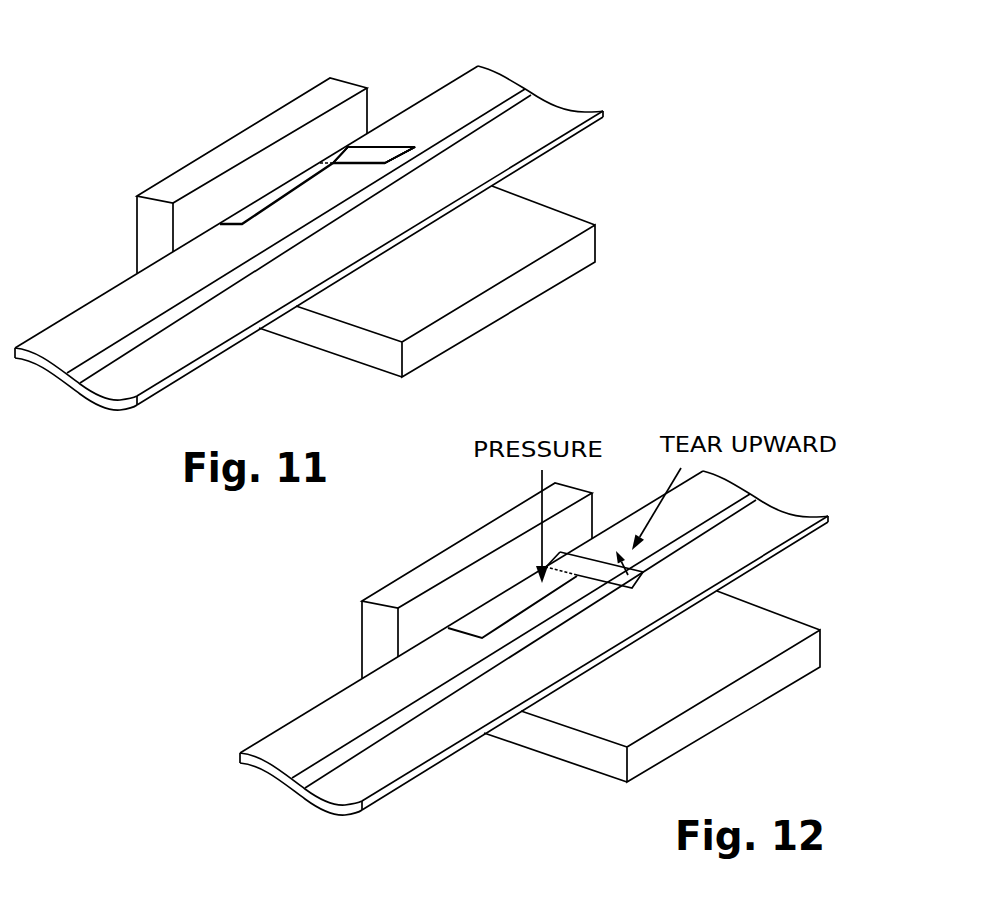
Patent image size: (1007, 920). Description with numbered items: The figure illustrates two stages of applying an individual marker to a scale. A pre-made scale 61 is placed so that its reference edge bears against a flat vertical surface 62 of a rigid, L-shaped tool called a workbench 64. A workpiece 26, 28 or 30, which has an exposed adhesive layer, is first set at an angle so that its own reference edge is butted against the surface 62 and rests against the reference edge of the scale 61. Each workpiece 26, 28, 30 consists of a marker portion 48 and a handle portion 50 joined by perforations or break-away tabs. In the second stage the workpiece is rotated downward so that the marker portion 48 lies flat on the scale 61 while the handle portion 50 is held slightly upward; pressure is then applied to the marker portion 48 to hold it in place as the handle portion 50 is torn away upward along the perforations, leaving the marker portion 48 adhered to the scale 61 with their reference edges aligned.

In FIG. 11, the workpiece 26 is at (297, 143).
In FIG. 11, the workpiece 28 is at (260, 95).
In FIG. 11, the workpiece 30 is at (280, 95).
In FIG. 11, the marker portion 48 is at (292, 192).
In FIG. 12, the marker portion 48 is at (507, 605).
In FIG. 11, the handle portion 50 is at (382, 153).
In FIG. 12, the handle portion 50 is at (595, 568).
In FIG. 11, the pre-made scale 61 is at (128, 385).
In FIG. 12, the pre-made scale 61 is at (347, 800).
In FIG. 11, the flat vertical surface 62 is at (227, 191).
In FIG. 11, the workbench 64 is at (560, 279).
In FIG. 12, the workbench 64 is at (777, 692).